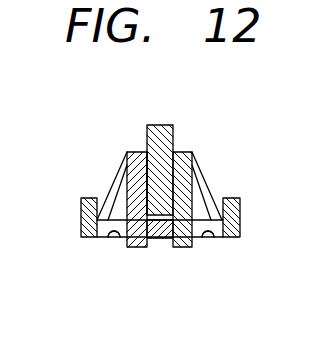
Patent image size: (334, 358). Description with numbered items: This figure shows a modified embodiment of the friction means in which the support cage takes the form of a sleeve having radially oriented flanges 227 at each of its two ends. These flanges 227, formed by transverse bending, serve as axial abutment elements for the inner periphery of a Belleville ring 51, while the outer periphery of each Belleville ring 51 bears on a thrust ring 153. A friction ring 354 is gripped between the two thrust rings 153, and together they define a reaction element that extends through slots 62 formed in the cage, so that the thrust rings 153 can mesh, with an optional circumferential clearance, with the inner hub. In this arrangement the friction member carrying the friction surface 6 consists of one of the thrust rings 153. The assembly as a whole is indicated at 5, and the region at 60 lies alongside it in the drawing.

The fastener assembly 5 is at (162, 259).
The friction surface 6 is at (147, 161).
The Belleville ring 51 is at (110, 188).
The sole 60 is at (323, 191).
The slots 62 is at (113, 237).
The thrust ring 153 is at (137, 150).
The flanges 227 is at (81, 215).
The friction ring 354 is at (161, 125).